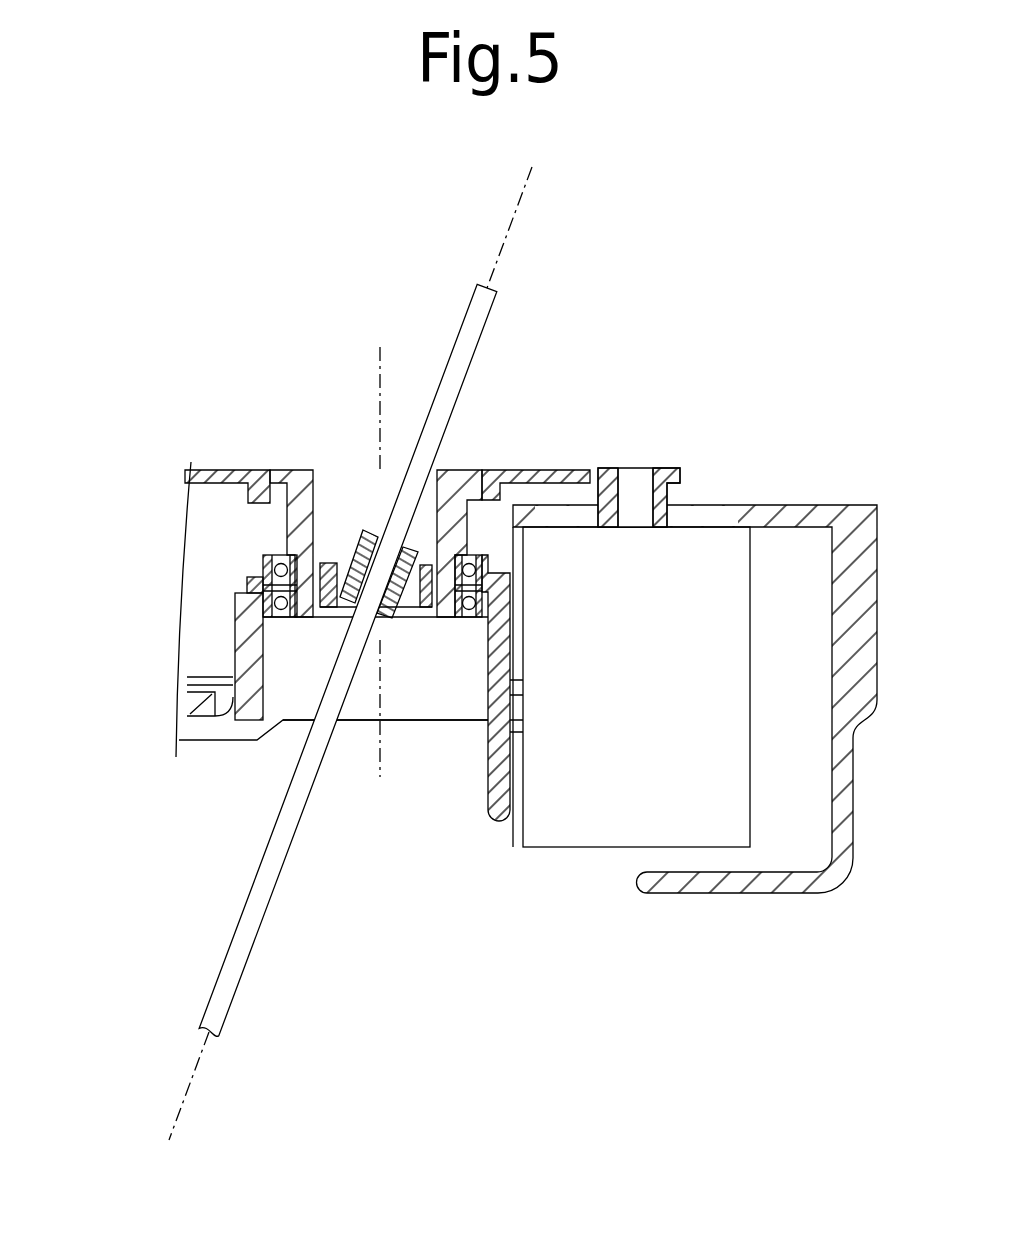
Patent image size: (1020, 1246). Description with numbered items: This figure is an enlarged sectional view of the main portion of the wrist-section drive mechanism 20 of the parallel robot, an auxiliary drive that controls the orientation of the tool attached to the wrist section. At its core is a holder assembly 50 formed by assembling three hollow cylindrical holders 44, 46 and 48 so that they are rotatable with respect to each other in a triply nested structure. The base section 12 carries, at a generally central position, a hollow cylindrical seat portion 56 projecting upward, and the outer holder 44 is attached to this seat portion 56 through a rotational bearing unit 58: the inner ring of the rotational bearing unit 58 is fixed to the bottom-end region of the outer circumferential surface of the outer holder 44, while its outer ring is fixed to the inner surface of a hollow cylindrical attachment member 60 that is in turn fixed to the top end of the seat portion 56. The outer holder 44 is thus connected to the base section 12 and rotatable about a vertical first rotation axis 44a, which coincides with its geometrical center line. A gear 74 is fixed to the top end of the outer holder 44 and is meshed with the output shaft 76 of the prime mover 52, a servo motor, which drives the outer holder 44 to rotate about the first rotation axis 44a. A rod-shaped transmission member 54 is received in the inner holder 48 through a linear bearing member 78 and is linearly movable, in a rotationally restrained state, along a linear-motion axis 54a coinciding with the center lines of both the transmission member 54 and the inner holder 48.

The base section 12 is at (234, 725).
The wrist-section drive mechanism 20 is at (186, 371).
The outer holder 44 is at (331, 478).
The first rotation axis 44a is at (378, 763).
The holder 46 is at (331, 556).
The inner holder 48 is at (363, 531).
The holder assembly 50 is at (301, 469).
The prime mover 52 is at (581, 833).
The transmission member 54 is at (253, 893).
The linear-motion axis 54a is at (177, 1120).
The seat portion 56 is at (243, 635).
The rotational bearing unit 58 is at (285, 556).
The attachment member 60 is at (247, 578).
The gear 74 is at (550, 467).
The output shaft 76 is at (637, 467).
The linear bearing member 78 is at (470, 467).